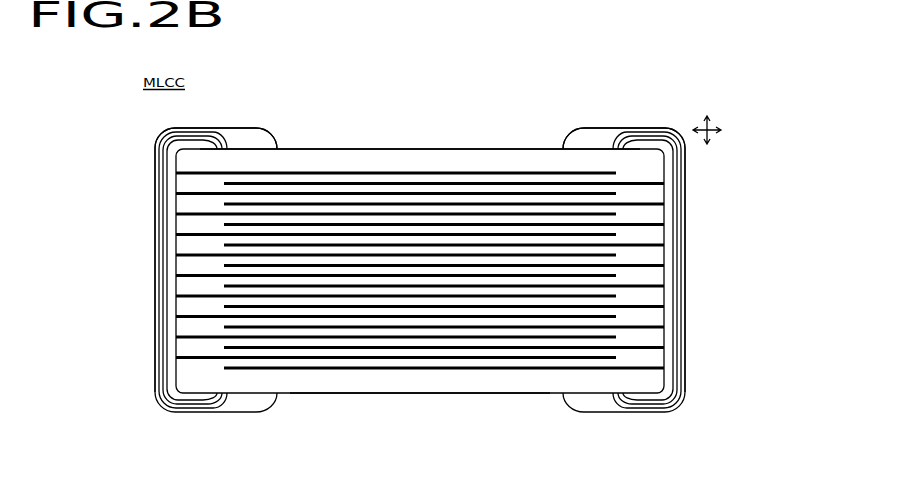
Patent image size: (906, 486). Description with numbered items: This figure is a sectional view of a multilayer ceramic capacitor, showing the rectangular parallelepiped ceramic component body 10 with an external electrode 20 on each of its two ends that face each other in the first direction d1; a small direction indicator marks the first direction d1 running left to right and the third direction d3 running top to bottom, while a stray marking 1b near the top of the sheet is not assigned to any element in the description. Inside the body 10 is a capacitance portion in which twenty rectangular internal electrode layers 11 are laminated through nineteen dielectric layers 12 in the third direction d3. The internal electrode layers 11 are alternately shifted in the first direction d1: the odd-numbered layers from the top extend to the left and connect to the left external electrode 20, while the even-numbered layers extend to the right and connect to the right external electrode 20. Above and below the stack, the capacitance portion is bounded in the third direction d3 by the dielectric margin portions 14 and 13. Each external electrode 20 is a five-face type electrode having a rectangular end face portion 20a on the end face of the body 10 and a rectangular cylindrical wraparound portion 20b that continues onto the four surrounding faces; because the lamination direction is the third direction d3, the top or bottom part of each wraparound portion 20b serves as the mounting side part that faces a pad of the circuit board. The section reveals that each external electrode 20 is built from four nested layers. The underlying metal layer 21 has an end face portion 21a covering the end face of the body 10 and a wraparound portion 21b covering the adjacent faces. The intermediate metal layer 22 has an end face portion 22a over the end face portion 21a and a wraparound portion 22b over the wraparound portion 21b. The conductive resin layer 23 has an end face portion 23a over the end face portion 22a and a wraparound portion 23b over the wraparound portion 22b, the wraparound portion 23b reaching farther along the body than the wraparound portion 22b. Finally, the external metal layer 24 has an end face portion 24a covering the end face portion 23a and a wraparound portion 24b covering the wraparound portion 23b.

The multilayer ceramic capacitor 1b is at (420, 235).
The ceramic component body 10 is at (393, 149).
The internal electrode layer 11 is at (450, 174).
The dielectric layer 12 is at (486, 181).
The dielectric margin portion 13 is at (519, 381).
The dielectric margin portion 14 is at (521, 158).
The external electrode 20 is at (155, 244).
The end face portion 20a is at (420, 270).
The wraparound portion 20b is at (221, 128).
The underlying metal layer 21 is at (168, 296).
The end face portion 21a is at (420, 270).
The wraparound portion 21b is at (420, 270).
The intermediate metal layer 22 is at (164, 318).
The end face portion 22a is at (420, 270).
The wraparound portion 22b is at (420, 270).
The conductive resin layer 23 is at (160, 342).
The end face portion 23a is at (420, 270).
The wraparound portion 23b is at (420, 270).
The external metal layer 24 is at (156, 366).
The end face portion 24a is at (420, 270).
The wraparound portion 24b is at (420, 270).
The first direction d1 is at (716, 132).
The third direction d3 is at (707, 121).